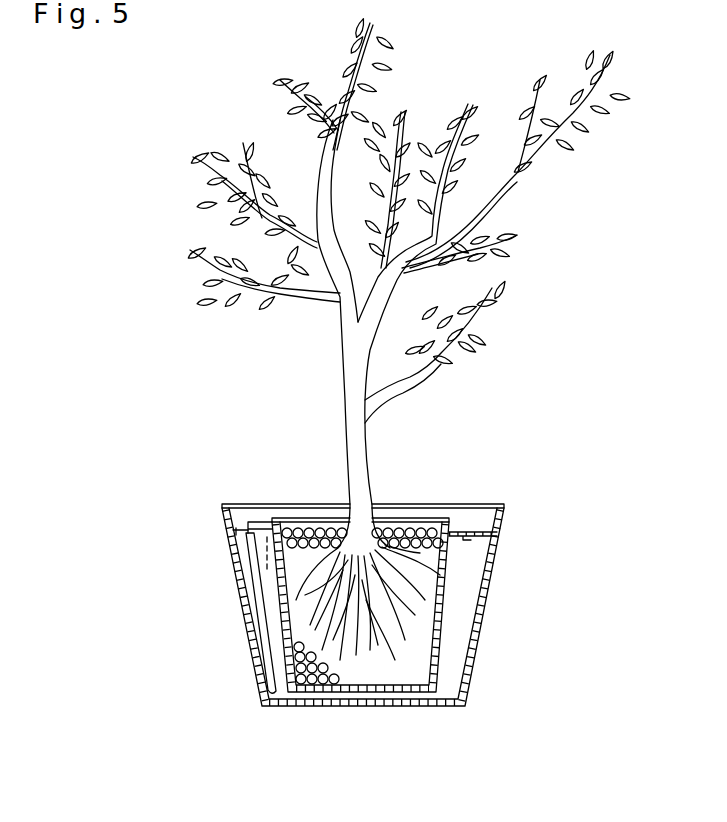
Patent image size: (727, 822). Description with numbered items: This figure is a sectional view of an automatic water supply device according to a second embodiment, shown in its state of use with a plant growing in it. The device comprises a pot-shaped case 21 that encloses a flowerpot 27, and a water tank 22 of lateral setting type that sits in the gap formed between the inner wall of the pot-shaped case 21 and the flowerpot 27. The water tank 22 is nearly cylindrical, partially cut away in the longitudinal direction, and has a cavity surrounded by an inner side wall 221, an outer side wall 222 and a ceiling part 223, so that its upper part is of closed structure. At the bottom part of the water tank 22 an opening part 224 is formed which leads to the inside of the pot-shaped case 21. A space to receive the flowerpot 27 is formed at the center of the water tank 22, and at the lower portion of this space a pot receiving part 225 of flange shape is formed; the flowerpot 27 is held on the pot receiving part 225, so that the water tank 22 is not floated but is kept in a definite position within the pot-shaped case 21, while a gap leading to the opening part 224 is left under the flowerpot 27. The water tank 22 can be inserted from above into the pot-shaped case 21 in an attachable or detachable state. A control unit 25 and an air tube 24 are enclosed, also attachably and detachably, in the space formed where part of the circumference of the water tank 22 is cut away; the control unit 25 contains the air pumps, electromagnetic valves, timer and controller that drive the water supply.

The pot-shaped case 21 is at (238, 627).
The water tank 22 is at (251, 562).
The inner side wall 221 is at (450, 558).
The outer side wall 222 is at (468, 665).
The ceiling part 223 is at (262, 522).
The opening part 224 is at (281, 708).
The pot receiving part 225 is at (277, 701).
The air tube 24 is at (252, 580).
The control unit 25 is at (246, 520).
The flowerpot 27 is at (390, 518).